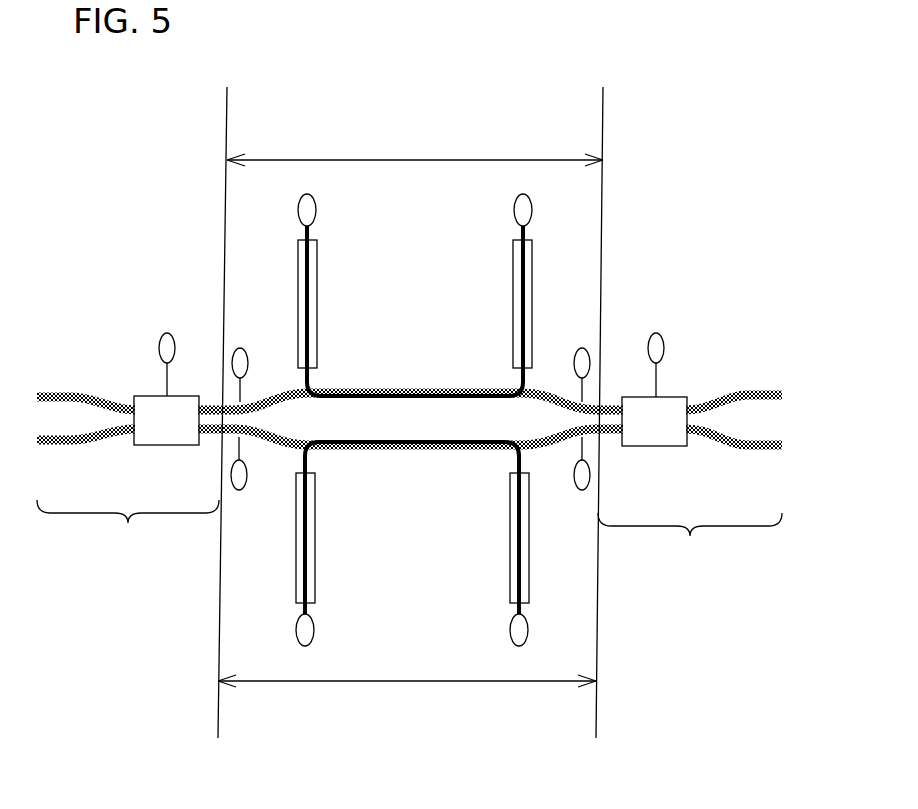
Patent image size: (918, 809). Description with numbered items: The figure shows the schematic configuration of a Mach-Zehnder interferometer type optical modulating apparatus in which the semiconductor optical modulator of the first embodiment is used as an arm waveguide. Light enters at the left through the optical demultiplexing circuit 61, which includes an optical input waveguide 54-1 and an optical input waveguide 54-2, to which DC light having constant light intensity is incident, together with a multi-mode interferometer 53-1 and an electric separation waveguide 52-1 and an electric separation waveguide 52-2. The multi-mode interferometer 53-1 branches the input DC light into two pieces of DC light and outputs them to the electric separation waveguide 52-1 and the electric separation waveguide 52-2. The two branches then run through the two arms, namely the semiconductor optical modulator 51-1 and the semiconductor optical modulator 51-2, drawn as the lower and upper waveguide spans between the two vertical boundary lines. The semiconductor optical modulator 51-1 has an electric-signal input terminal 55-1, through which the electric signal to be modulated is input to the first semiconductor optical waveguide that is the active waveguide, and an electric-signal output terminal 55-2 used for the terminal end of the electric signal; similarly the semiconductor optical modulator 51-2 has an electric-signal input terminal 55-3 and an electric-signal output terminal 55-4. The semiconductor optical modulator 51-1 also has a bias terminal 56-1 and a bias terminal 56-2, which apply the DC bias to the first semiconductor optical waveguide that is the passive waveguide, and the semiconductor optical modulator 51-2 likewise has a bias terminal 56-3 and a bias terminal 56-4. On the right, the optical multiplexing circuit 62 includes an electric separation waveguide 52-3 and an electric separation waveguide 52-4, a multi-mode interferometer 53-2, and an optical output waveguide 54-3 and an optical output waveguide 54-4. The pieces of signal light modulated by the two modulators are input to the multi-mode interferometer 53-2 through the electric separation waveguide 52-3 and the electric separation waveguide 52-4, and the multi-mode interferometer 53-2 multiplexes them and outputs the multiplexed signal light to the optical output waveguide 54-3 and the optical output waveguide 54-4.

The semiconductor optical modulator 51-1 is at (407, 691).
The semiconductor optical modulator 51-2 is at (415, 140).
The electric separation waveguide 52-1 is at (208, 438).
The electric separation waveguide 52-2 is at (208, 400).
The electric separation waveguide 52-3 is at (613, 438).
The electric separation waveguide 52-4 is at (615, 400).
The multi-mode interferometer 53-1 is at (160, 447).
The multi-mode interferometer 53-2 is at (655, 448).
The optical input waveguide 54-1 is at (52, 452).
The optical input waveguide 54-2 is at (53, 393).
The optical output waveguide 54-3 is at (775, 452).
The optical output waveguide 54-4 is at (775, 391).
The electric-signal input terminal 55-1 is at (314, 630).
The electric-signal output terminal 55-2 is at (510, 630).
The electric-signal input terminal 55-3 is at (316, 210).
The electric-signal output terminal 55-4 is at (514, 210).
The bias terminal 56-1 is at (239, 490).
The bias terminal 56-2 is at (582, 490).
The bias terminal 56-3 is at (240, 348).
The bias terminal 56-4 is at (582, 348).
The optical demultiplexing circuit 61 is at (128, 527).
The optical multiplexing circuit 62 is at (690, 540).